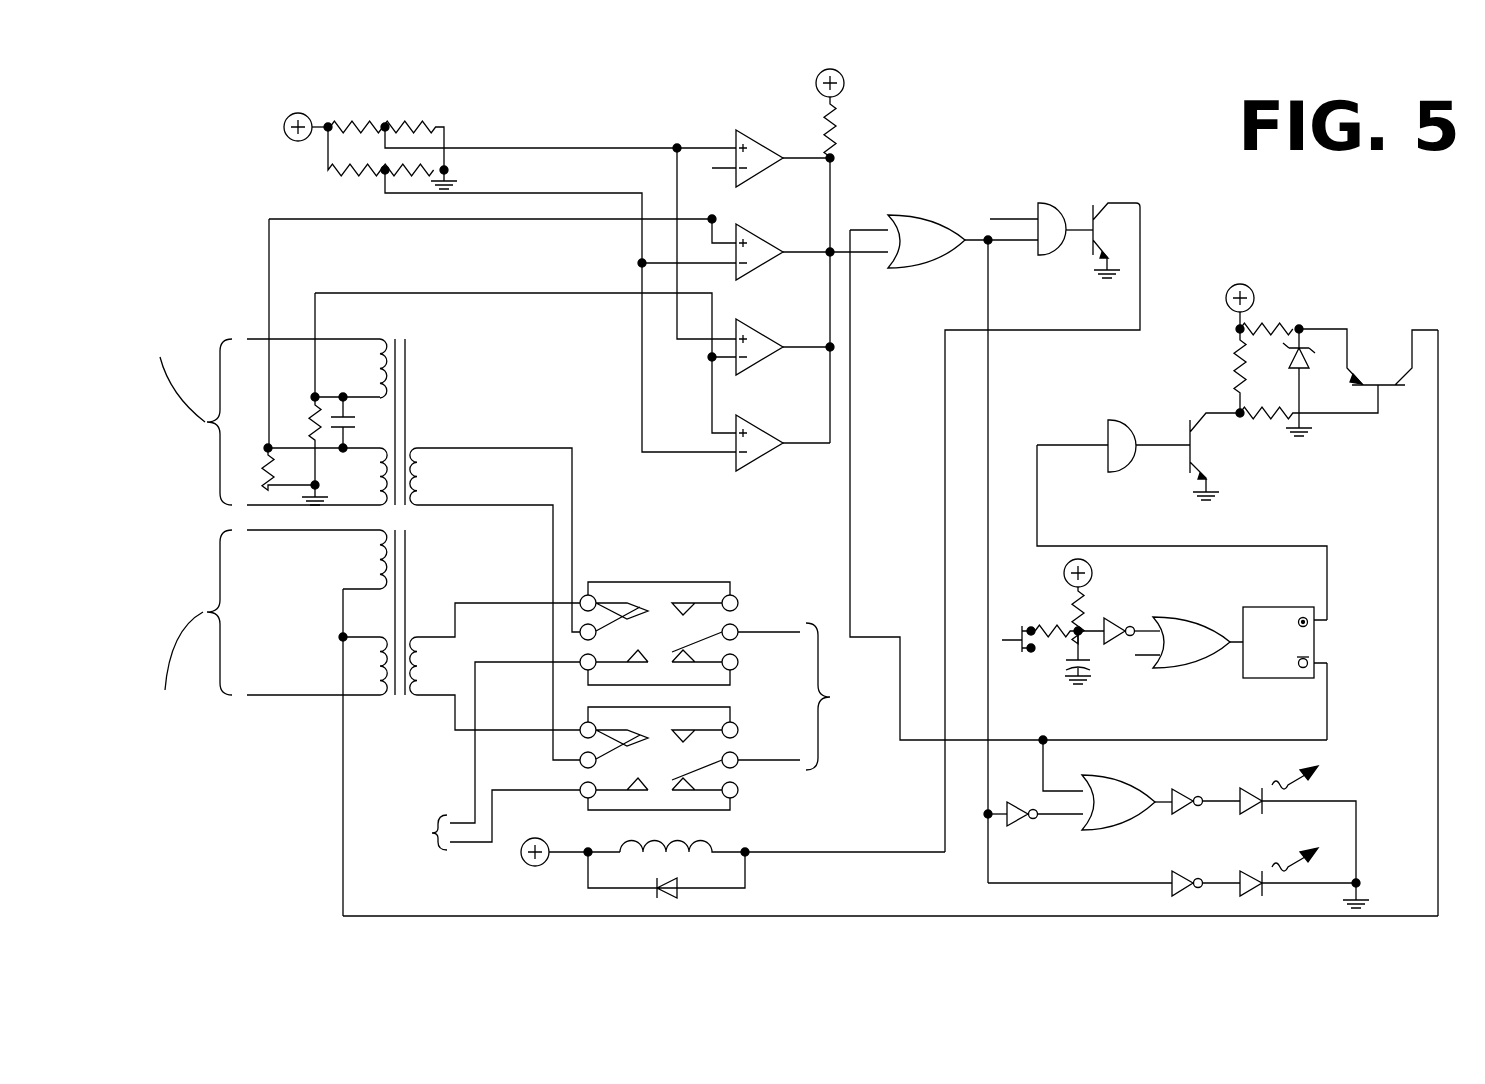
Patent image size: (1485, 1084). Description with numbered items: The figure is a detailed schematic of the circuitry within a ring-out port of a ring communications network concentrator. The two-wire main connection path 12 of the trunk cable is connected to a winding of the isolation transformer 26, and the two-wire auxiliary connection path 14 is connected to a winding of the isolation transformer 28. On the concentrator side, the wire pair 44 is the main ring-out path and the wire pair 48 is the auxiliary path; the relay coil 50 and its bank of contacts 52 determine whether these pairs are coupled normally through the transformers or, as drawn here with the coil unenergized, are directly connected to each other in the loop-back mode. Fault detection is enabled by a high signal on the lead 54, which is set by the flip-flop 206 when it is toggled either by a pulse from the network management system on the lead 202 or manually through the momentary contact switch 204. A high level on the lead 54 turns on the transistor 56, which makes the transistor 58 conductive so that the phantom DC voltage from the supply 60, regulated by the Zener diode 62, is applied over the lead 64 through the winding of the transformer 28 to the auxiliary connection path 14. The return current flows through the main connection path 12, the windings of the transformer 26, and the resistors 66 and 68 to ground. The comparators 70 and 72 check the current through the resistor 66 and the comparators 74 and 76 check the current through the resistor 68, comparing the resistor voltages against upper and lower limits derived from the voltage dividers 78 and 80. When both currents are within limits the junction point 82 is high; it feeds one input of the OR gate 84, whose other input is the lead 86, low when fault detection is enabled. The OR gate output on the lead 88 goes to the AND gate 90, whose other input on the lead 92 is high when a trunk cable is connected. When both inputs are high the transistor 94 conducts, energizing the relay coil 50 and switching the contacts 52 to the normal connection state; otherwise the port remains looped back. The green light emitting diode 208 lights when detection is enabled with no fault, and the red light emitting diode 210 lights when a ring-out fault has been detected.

The main connection path 12 is at (160, 385).
The auxiliary connection path 14 is at (165, 657).
The isolation transformer 26 is at (398, 335).
The isolation transformer 28 is at (396, 720).
The wire pair 44 is at (485, 756).
The wire pair 48 is at (804, 696).
The relay coil 50 is at (715, 835).
The bank of contacts 52 is at (684, 566).
The lead 54 is at (1075, 448).
The transistor 56 is at (1200, 450).
The transistor 58 is at (1378, 380).
The supply 60 is at (1248, 285).
The Zener diode 62 is at (1305, 380).
The lead 64 is at (1438, 625).
The resistor 66 is at (262, 456).
The resistor 68 is at (310, 412).
The comparator 70 is at (772, 150).
The comparator 72 is at (770, 237).
The comparator 74 is at (775, 338).
The comparator 76 is at (775, 432).
The voltage divider 78 is at (394, 111).
The voltage divider 80 is at (348, 190).
The junction point 82 is at (843, 265).
The OR gate 84 is at (945, 255).
The lead 86 is at (862, 228).
The lead 88 is at (1015, 250).
The AND gate 90 is at (1060, 205).
The lead 92 is at (1000, 215).
The transistor 94 is at (1130, 222).
The lead 202 is at (1140, 660).
The momentary contact switch 204 is at (1022, 632).
The flip-flop 206 is at (1283, 680).
The green light emitting diode 208 is at (1250, 790).
The red light emitting diode 210 is at (1250, 893).